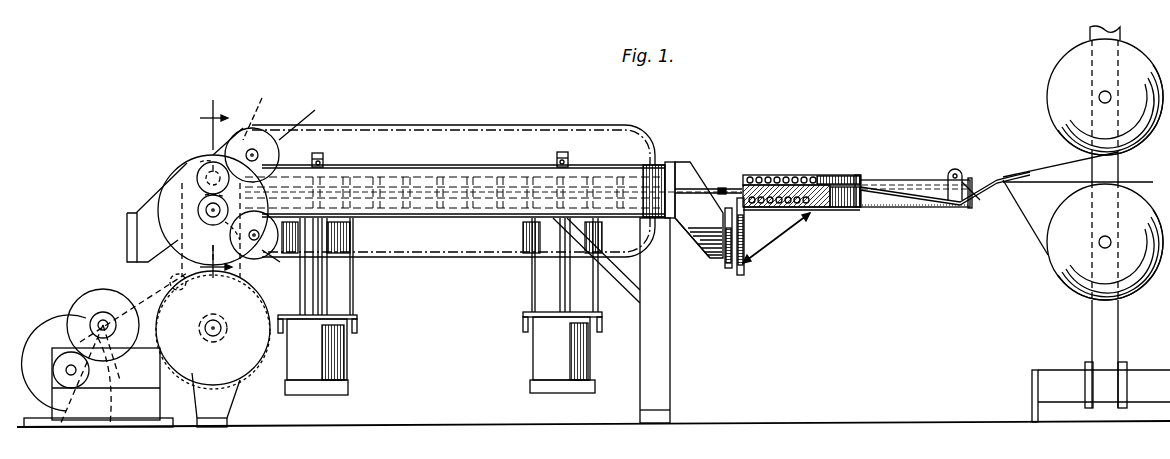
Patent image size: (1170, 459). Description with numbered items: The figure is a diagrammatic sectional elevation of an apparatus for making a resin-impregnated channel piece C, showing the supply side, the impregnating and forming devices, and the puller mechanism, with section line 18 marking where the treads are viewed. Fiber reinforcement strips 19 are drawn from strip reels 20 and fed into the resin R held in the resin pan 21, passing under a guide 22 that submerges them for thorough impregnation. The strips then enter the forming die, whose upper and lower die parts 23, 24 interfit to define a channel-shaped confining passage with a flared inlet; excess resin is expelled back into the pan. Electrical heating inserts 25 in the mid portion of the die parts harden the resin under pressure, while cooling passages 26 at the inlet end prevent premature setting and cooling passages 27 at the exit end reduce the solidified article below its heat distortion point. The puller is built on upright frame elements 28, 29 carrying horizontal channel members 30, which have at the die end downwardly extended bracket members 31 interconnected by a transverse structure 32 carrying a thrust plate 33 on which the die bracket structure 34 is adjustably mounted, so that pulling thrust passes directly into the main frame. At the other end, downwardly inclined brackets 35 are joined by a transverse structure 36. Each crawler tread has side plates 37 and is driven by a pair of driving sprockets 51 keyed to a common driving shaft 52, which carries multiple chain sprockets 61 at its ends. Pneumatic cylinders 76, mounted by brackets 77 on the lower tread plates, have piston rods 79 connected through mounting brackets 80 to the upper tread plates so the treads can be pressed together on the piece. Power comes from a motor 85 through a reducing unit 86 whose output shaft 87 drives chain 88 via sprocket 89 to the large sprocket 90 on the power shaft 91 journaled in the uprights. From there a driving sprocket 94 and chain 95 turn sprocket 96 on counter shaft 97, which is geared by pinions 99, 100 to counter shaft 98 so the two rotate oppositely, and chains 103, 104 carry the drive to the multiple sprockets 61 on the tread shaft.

The section line 18 is at (206, 186).
The fiber reinforcement strips 19 is at (1040, 176).
The strip reels 20 is at (1050, 78).
The resin pan 21 is at (894, 207).
The guide 22 is at (960, 182).
The upper die part 23 is at (782, 180).
The lower die part 24 is at (790, 211).
The electrical heating inserts 25 is at (838, 176).
The cooling liquid passages 26 is at (857, 178).
The cooling liquid passages 27 is at (752, 177).
The upright frame element 28 is at (230, 403).
The upright frame element 29 is at (660, 355).
The horizontal channel members 30 is at (668, 162).
The downwardly extended bracket members 31 is at (700, 235).
The transverse structure 32 is at (726, 255).
The thrust plate 33 is at (740, 275).
The bracket structure 34 is at (770, 262).
The downwardly inclined brackets 35 is at (172, 185).
The transverse structure 36 is at (136, 234).
The side plates 37 is at (448, 128).
The driving sprockets 51 is at (297, 186).
The driving shaft 52 is at (252, 150).
The multiple chain sprockets 61 is at (248, 175).
The cylinders 76 is at (347, 363).
The bracket 77 is at (353, 288).
The piston rods 79 is at (327, 298).
The mounting brackets 80 is at (319, 153).
The motor 85 is at (92, 293).
The reducing unit 86 is at (55, 328).
The output shaft 87 is at (71, 388).
The chain 88 is at (148, 310).
The sprocket 89 is at (105, 425).
The large sprocket 90 is at (172, 380).
The power shaft 91 is at (220, 330).
The driving sprocket 94 is at (220, 338).
The chain 95 is at (178, 290).
The sprocket 96 is at (178, 280).
The counter shaft 97 is at (206, 210).
The counter shaft 98 is at (200, 162).
The pinion 99 is at (205, 195).
The pinion 100 is at (197, 178).
The chain 103 is at (225, 222).
The chain 104 is at (212, 165).
The channel piece C is at (712, 188).
The resin R is at (900, 190).